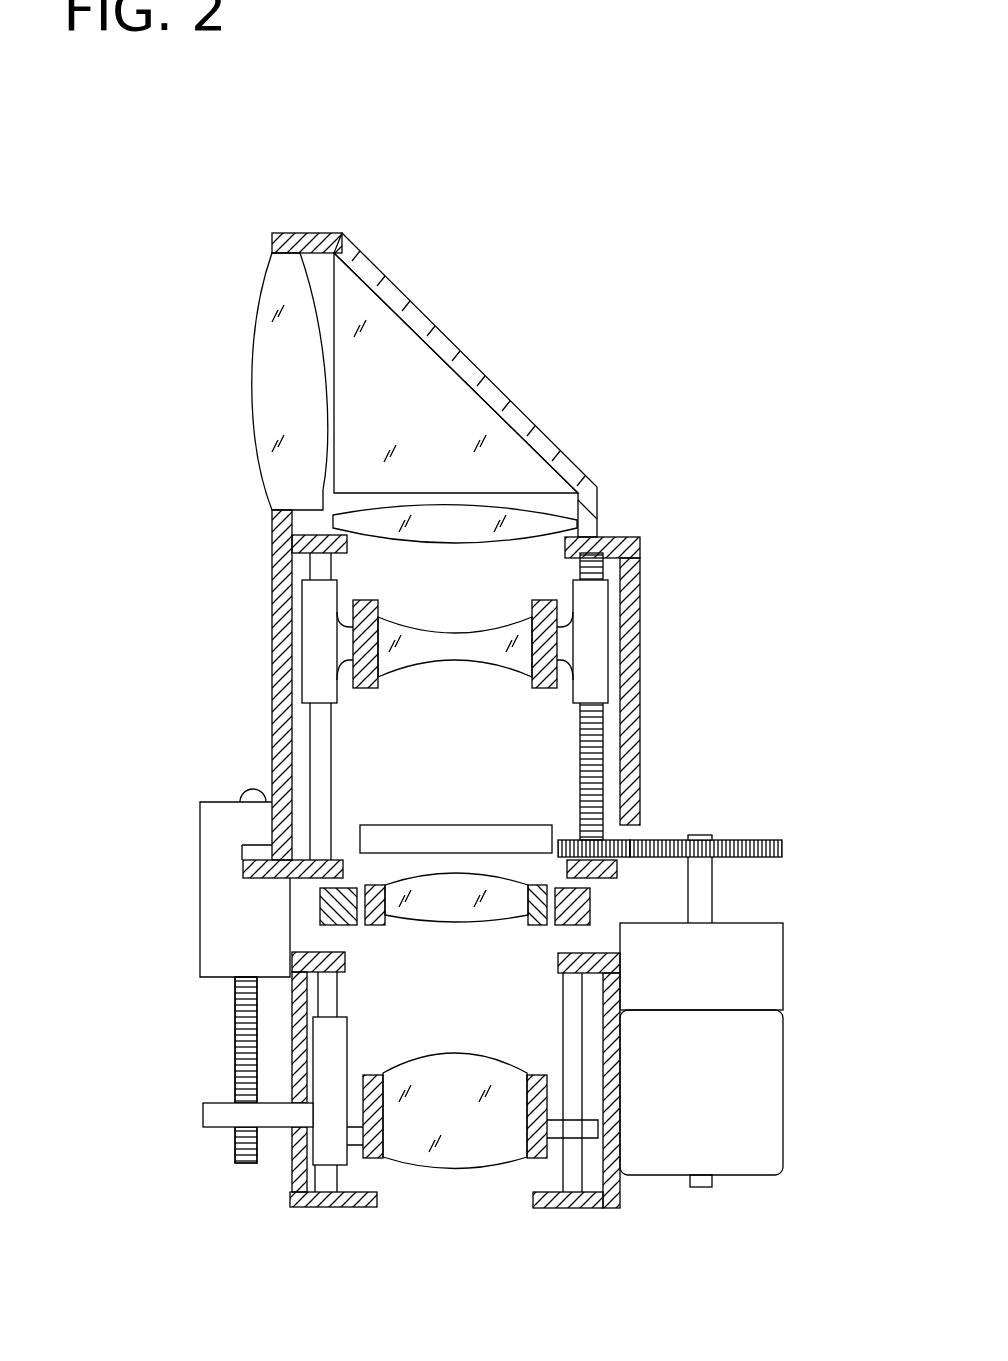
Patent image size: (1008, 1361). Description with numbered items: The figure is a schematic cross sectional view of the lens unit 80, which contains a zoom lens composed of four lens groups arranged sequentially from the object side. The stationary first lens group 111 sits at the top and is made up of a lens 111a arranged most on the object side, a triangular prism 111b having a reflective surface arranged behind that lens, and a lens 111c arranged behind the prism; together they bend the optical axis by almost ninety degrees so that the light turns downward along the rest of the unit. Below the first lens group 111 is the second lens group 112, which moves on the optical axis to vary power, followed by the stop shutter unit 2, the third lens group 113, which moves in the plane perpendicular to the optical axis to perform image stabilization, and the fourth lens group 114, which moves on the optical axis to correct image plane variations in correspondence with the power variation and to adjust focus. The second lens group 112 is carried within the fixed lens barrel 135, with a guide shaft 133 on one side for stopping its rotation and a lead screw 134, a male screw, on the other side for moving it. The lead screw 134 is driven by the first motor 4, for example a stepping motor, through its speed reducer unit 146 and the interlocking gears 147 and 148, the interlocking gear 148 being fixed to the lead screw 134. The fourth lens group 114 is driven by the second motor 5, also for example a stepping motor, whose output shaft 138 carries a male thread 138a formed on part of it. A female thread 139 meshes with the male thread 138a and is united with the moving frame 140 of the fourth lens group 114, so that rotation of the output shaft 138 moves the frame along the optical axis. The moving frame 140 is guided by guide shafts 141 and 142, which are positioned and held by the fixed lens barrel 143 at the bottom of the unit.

The stop shutter unit 2 is at (432, 825).
The first motor 4 is at (757, 1092).
The second motor 5 is at (215, 824).
The lens unit 80 is at (659, 388).
The first lens group 111 is at (510, 208).
The lens 111a is at (305, 268).
The triangular prism 111b is at (405, 363).
The lens 111c is at (473, 522).
The second lens group 112 is at (455, 633).
The third lens group 113 is at (455, 910).
The fourth lens group 114 is at (478, 1150).
The guide shaft 133 is at (310, 728).
The lead screw 134 is at (607, 738).
The fixed lens barrel 135 is at (273, 606).
The output shaft 138 is at (235, 1010).
The male thread 138a is at (235, 1057).
The female thread 139 is at (203, 1115).
The moving frame 140 is at (290, 1150).
The guide shaft 141 is at (347, 1178).
The guide shaft 142 is at (572, 1185).
The fixed lens barrel 143 is at (340, 1207).
The speed reducer unit 146 is at (762, 968).
The interlocking gear 147 is at (785, 848).
The interlocking gear 148 is at (647, 837).